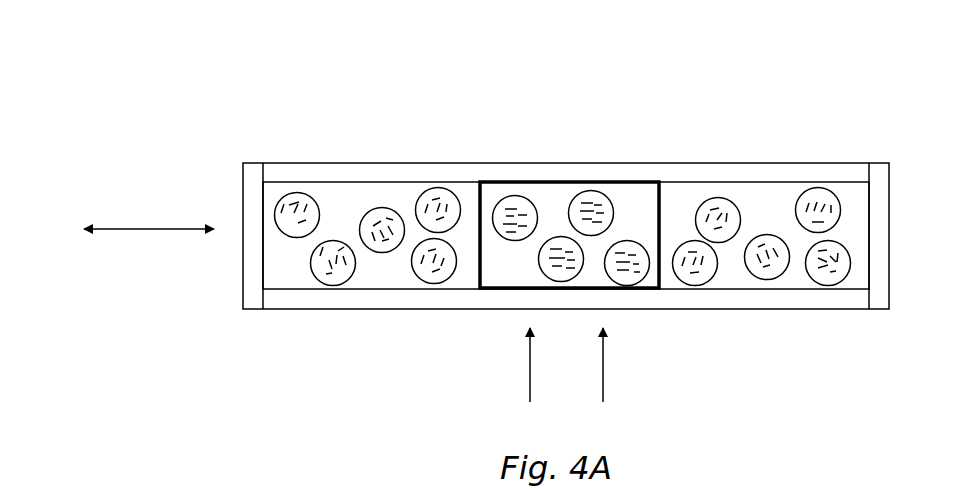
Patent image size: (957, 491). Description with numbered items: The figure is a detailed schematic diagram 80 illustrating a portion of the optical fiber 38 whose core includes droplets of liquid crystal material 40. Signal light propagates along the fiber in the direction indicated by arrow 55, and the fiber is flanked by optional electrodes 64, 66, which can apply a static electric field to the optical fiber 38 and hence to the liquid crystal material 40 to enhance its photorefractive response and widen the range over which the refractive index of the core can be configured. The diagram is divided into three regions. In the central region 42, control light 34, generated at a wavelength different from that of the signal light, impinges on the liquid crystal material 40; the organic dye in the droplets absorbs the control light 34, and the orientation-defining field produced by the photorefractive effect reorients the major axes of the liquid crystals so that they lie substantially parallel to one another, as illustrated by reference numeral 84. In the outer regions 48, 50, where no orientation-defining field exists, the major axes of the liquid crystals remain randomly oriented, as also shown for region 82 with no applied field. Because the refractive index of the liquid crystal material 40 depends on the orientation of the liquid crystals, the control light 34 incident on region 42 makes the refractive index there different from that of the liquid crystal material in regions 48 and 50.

The detailed schematic diagram 80 is at (202, 65).
The optical fiber 38 is at (257, 125).
The liquid crystal material 40 is at (300, 192).
The region 82 is at (368, 237).
The reoriented liquid crystal orientation 84 is at (575, 237).
The arrow 55 is at (148, 232).
The electrode 64 is at (243, 255).
The electrode 66 is at (890, 248).
The region 48 is at (382, 276).
The region 42 is at (509, 275).
The region 50 is at (733, 280).
The control light 34 is at (579, 386).